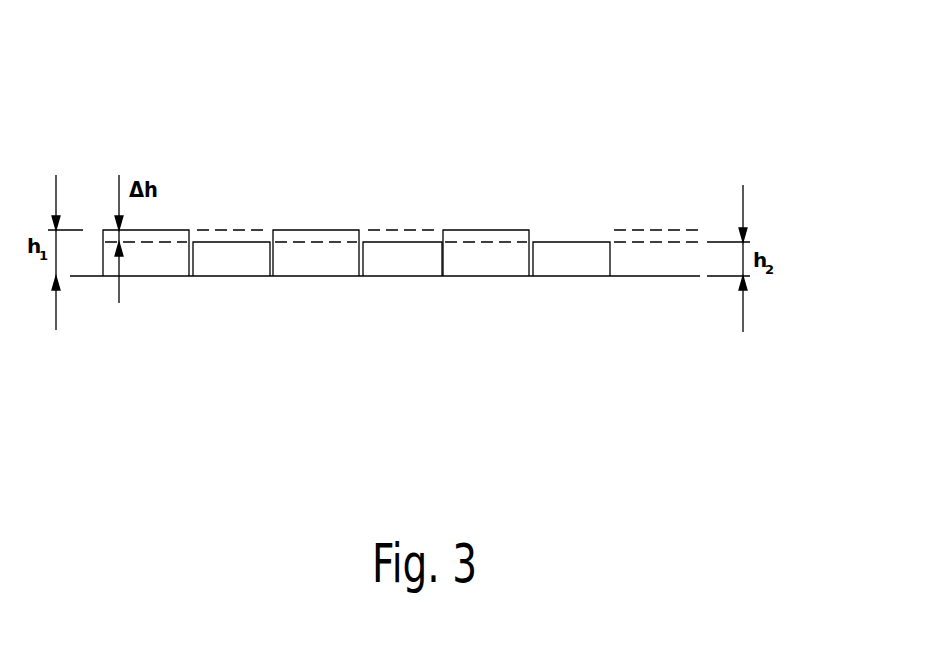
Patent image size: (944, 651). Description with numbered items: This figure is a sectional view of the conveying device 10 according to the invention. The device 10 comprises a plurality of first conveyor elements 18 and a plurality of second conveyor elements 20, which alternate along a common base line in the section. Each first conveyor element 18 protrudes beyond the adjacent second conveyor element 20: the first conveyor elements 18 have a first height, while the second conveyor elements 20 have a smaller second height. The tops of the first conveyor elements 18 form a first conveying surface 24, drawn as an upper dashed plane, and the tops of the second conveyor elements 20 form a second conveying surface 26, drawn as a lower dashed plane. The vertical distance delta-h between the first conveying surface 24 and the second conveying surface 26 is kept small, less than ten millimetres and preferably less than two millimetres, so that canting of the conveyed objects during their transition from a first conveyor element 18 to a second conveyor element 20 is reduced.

The component carrier / device 10 is at (713, 108).
The first conveyor element 18 is at (163, 255).
The second conveyor element 20 is at (235, 250).
The first conveying surface 24 is at (653, 230).
The second conveying surface 26 is at (653, 242).